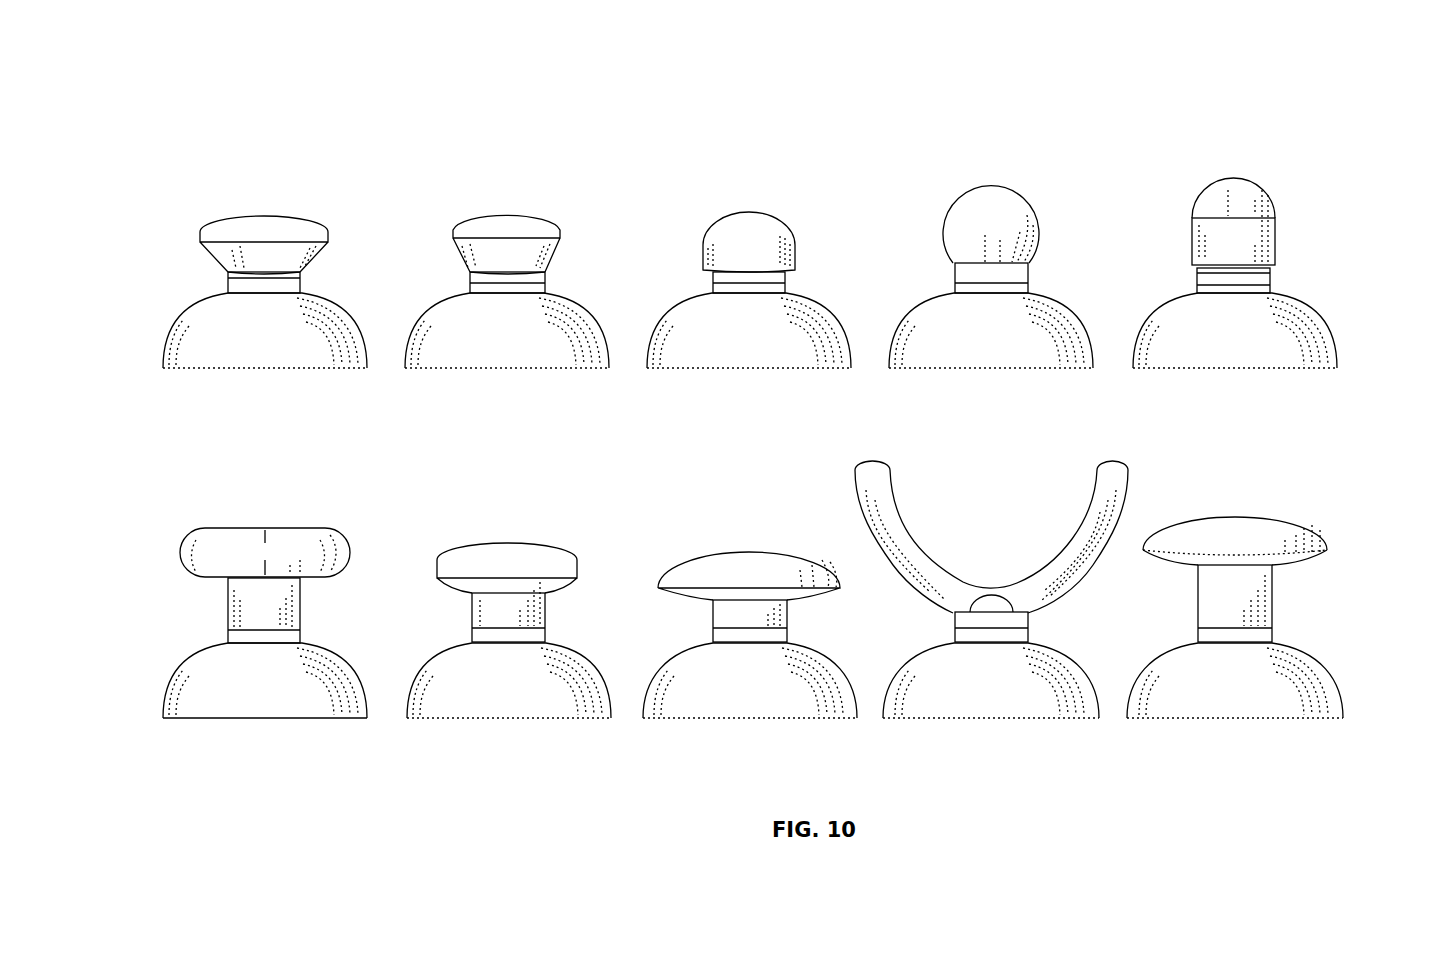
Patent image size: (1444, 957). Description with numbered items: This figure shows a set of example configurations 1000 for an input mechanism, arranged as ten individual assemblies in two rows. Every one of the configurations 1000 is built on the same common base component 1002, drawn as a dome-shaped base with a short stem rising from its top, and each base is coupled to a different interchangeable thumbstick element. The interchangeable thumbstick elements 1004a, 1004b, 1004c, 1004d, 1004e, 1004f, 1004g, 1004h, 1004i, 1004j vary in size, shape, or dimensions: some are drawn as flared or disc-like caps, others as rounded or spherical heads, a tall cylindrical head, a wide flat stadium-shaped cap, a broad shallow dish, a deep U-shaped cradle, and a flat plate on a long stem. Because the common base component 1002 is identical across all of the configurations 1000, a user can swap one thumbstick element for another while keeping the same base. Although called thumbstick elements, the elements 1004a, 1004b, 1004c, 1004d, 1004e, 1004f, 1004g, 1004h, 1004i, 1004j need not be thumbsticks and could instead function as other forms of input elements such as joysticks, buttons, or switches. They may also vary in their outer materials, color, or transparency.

The example configurations 1000 is at (814, 121).
The common base component 1002 is at (310, 357).
The interchangeable thumbstick element 1004a is at (298, 224).
The interchangeable thumbstick element 1004b is at (527, 224).
The interchangeable thumbstick element 1004c is at (768, 225).
The interchangeable thumbstick element 1004d is at (1010, 200).
The interchangeable thumbstick element 1004e is at (1237, 192).
The interchangeable thumbstick element 1004f is at (298, 540).
The interchangeable thumbstick element 1004g is at (538, 556).
The interchangeable thumbstick element 1004h is at (748, 556).
The interchangeable thumbstick element 1004i is at (1085, 550).
The interchangeable thumbstick element 1004j is at (1262, 525).